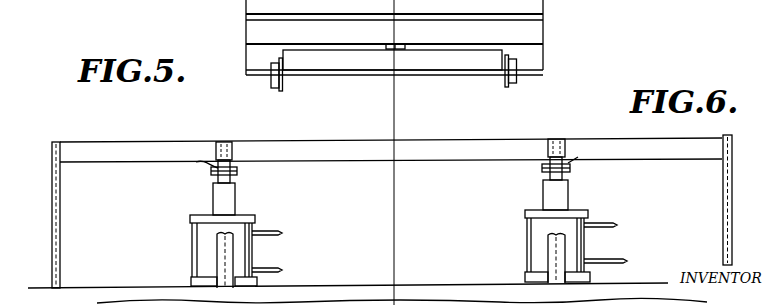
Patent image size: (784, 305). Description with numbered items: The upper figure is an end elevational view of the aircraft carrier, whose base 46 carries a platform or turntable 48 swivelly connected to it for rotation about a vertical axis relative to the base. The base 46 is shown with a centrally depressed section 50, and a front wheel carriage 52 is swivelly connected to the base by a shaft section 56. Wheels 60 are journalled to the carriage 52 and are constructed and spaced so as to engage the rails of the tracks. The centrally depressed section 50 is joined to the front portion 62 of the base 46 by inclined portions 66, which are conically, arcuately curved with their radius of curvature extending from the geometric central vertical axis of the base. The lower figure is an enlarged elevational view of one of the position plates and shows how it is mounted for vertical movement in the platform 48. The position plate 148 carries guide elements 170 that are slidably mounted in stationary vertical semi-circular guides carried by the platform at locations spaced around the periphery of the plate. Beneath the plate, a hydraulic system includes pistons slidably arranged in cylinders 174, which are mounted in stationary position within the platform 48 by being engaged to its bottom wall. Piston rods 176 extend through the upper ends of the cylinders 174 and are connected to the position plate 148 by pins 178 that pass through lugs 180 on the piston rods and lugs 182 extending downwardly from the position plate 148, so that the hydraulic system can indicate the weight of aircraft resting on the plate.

In FIG. 5, the base 46 is at (548, 30).
In FIG. 5, the platform or turntable 48 is at (547, 3).
In FIG. 6, the platform or turntable 48 is at (388, 283).
In FIG. 5, the centrally depressed section 50 is at (228, 4).
In FIG. 5, the front wheel carriage 52 is at (292, 58).
In FIG. 5, the shaft section 56 is at (400, 47).
In FIG. 5, the wheels 60 is at (283, 88).
In FIG. 5, the front portion of the base 62 is at (332, 42).
In FIG. 5, the inclined portions 66 is at (547, 56).
In FIG. 6, the position plate 148 is at (341, 158).
In FIG. 6, the guide elements 170 is at (52, 200).
In FIG. 6, the cylinders 174 is at (240, 257).
In FIG. 6, the piston rods 176 is at (232, 202).
In FIG. 6, the pins 178 is at (238, 172).
In FIG. 6, the lugs 180 is at (216, 183).
In FIG. 6, the lugs 182 is at (211, 166).